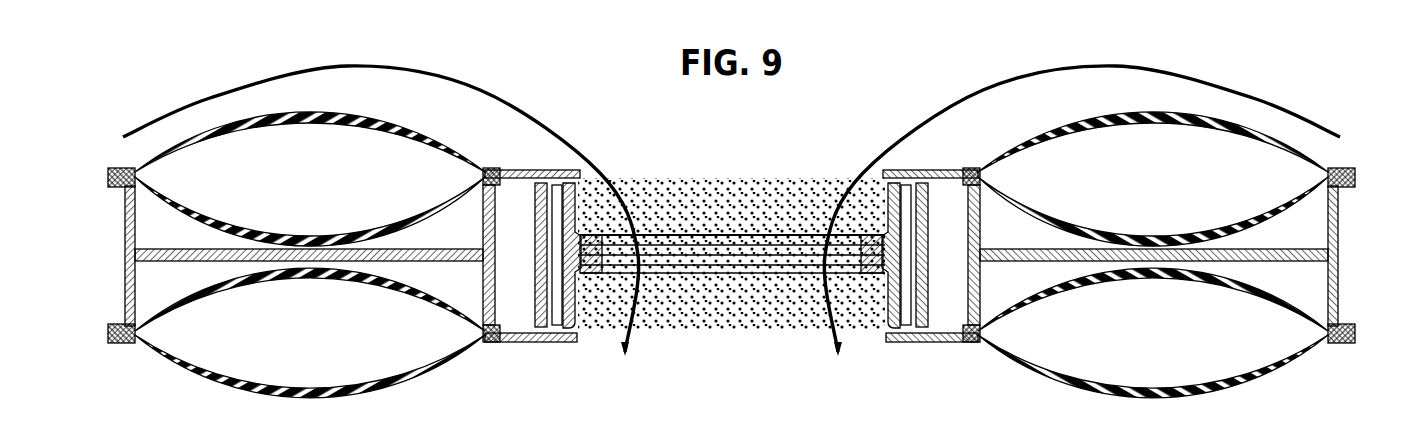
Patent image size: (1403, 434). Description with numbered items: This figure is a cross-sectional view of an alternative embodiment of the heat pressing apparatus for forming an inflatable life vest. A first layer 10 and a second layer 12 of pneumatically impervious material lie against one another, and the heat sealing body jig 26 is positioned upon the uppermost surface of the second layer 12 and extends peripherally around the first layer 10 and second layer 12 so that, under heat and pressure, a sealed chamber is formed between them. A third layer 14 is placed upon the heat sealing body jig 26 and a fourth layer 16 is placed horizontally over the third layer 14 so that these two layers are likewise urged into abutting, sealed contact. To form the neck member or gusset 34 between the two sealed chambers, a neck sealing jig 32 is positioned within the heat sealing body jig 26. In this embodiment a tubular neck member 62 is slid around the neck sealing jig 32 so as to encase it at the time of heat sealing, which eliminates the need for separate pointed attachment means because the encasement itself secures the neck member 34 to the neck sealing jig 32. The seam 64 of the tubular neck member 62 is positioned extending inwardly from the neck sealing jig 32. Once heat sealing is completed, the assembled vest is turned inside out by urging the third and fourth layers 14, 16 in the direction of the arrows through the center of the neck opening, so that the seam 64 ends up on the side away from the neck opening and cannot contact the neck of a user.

The first layer 10 is at (354, 384).
The second layer 12 is at (310, 274).
The third layer 14 is at (243, 233).
The fourth layer 16 is at (398, 136).
The heat sealing body jig 26 is at (125, 256).
The neck sealing jig 32 is at (540, 228).
The neck member 34 is at (565, 170).
The tubular neck member 62 is at (578, 305).
The seam 64 is at (598, 243).